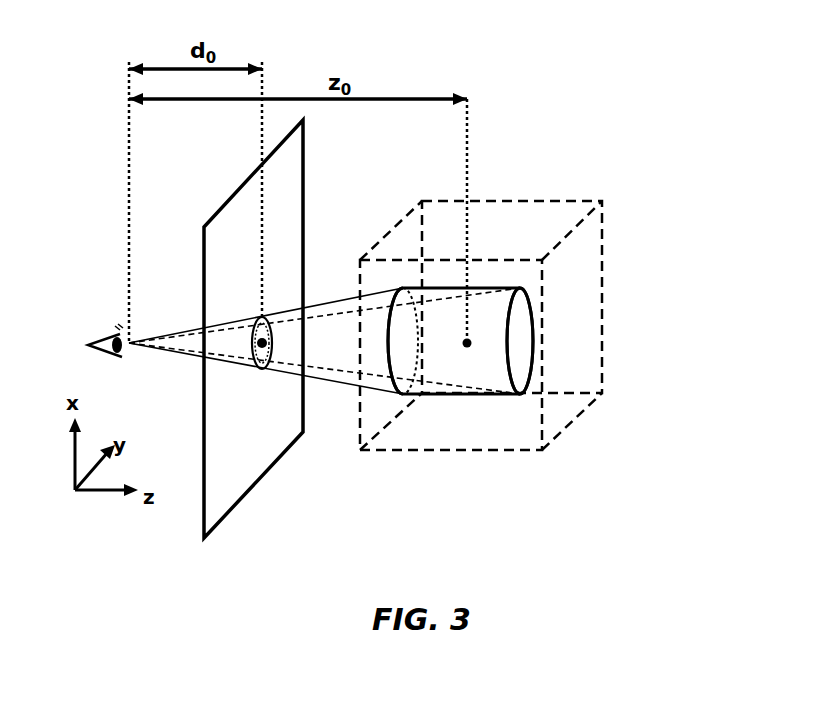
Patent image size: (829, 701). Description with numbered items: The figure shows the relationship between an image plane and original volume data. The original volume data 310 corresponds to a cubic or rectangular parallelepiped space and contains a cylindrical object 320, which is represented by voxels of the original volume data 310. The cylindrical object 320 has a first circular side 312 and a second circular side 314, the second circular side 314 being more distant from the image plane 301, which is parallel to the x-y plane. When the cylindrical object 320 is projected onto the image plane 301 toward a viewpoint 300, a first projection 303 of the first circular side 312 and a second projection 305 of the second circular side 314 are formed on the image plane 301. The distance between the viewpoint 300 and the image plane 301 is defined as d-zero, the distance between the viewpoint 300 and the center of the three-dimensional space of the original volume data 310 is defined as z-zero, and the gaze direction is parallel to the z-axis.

The viewpoint 300 is at (112, 328).
The image plane 301 is at (240, 188).
The first projection 303 is at (262, 317).
The second projection 305 is at (262, 370).
The original volume data 310 is at (573, 422).
The first circular side 312 is at (400, 300).
The second circular side 314 is at (530, 338).
The cylindrical object 320 is at (470, 395).